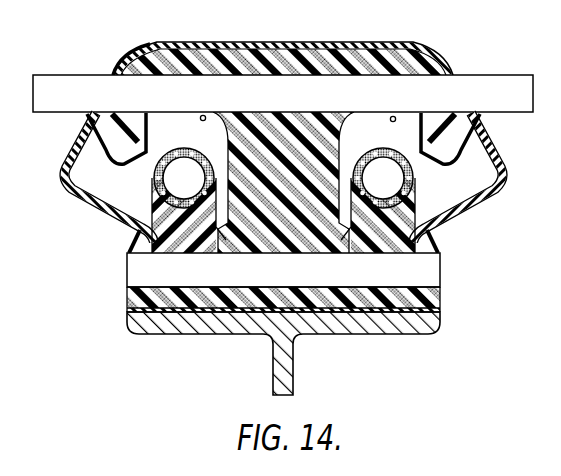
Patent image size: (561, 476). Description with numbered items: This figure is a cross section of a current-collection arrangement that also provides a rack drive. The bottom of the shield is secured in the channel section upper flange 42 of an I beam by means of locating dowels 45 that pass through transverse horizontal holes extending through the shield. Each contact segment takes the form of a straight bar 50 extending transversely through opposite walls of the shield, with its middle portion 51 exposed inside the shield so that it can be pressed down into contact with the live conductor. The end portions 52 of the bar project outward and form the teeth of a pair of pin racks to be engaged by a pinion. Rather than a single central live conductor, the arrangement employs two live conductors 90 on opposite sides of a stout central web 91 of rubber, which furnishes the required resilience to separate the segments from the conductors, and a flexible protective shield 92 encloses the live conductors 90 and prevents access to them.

The channel section upper flange 42 is at (177, 322).
The locating dowels 45 is at (137, 273).
The straight bar 50 is at (288, 96).
The middle portion 51 is at (204, 115).
The end portions 52 is at (55, 98).
The live conductors 90 is at (179, 152).
The central web 91 is at (243, 298).
The flexible protective shield 92 is at (72, 197).